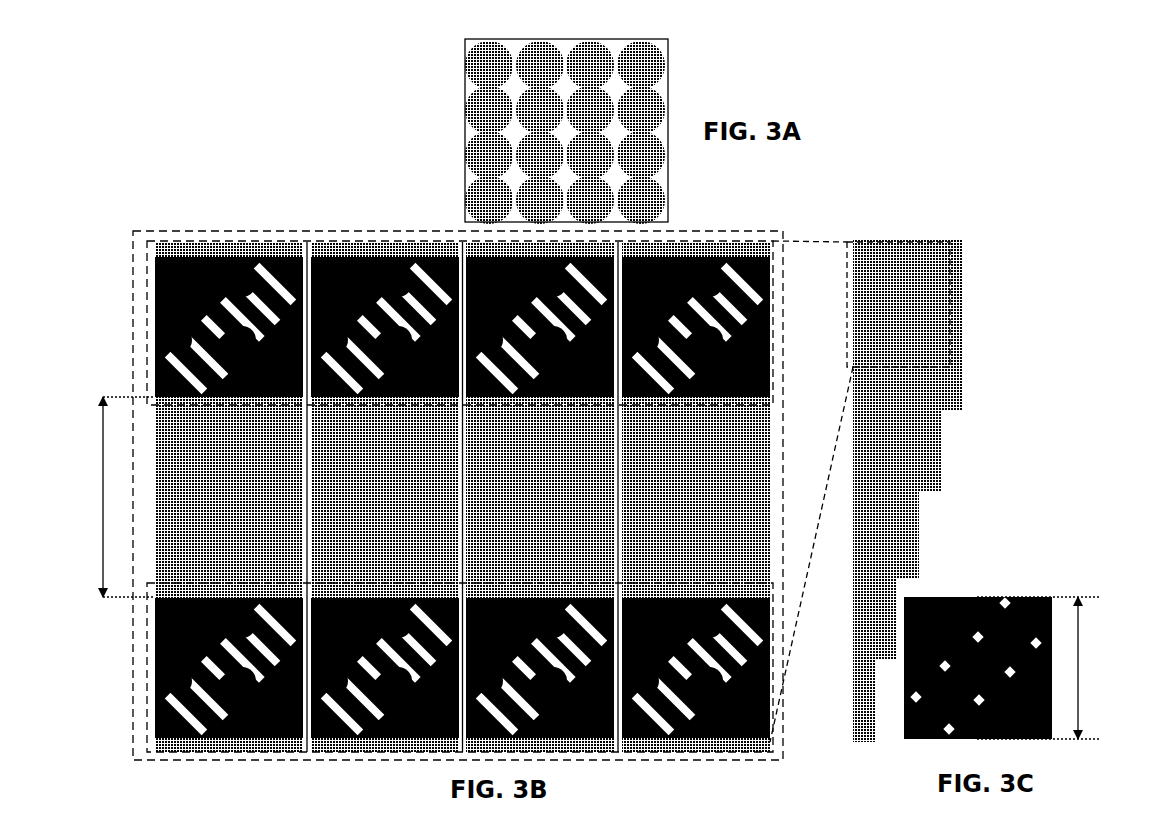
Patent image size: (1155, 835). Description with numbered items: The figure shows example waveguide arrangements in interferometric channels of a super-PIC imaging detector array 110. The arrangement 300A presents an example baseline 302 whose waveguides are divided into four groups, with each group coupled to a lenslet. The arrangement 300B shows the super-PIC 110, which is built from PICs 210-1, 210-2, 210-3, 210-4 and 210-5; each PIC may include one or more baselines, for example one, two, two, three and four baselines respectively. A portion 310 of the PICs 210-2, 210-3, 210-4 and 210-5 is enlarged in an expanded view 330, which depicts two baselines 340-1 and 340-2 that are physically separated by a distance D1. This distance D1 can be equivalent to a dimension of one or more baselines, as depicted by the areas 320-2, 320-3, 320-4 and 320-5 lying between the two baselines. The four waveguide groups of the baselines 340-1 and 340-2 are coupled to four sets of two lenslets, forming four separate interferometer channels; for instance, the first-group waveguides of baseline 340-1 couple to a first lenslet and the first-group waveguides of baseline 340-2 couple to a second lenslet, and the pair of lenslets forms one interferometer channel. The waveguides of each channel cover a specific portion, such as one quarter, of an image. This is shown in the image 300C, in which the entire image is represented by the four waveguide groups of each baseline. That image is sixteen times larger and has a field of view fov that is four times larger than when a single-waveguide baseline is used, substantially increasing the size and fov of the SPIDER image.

In FIG. 3A, the example waveguide arrangement in a baseline 300A is at (538, 124).
In FIG. 3A, the baseline 302 is at (671, 74).
In FIG. 3B, the super-PIC and expanded view arrangement 300B is at (156, 202).
In FIG. 3B, the expanded view 330 is at (290, 231).
In FIG. 3B, the first baseline 340-1 is at (148, 288).
In FIG. 3B, the second baseline 340-2 is at (148, 625).
In FIG. 3B, the area 320-5 is at (229, 497).
In FIG. 3B, the area 320-4 is at (385, 497).
In FIG. 3B, the area 320-3 is at (540, 497).
In FIG. 3B, the area 320-2 is at (696, 497).
In FIG. 3B, the distance D1 is at (112, 497).
In FIG. 3B, the super-PIC imaging detector array 110 is at (905, 464).
In FIG. 3B, the PIC 210-1 is at (963, 287).
In FIG. 3B, the PIC 210-2 is at (934, 241).
In FIG. 3B, the PIC 210-3 is at (910, 241).
In FIG. 3B, the PIC 210-4 is at (883, 241).
In FIG. 3B, the PIC 210-5 is at (859, 242).
In FIG. 3B, the portion of the PICs 310 is at (847, 276).
In FIG. 3C, the image 300C is at (1060, 574).
In FIG. 3C, the field of view fov is at (1043, 668).